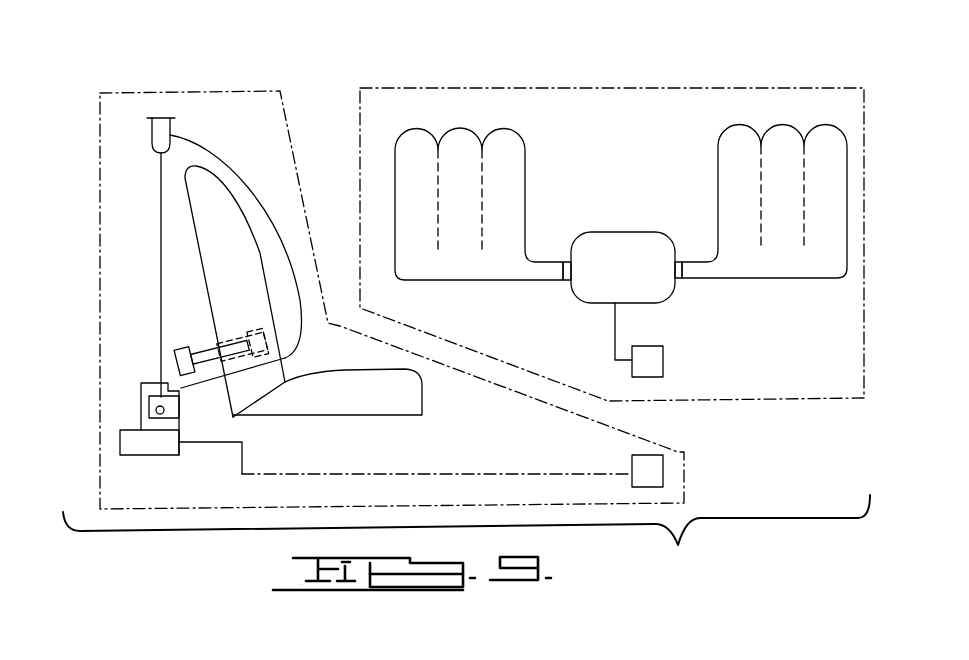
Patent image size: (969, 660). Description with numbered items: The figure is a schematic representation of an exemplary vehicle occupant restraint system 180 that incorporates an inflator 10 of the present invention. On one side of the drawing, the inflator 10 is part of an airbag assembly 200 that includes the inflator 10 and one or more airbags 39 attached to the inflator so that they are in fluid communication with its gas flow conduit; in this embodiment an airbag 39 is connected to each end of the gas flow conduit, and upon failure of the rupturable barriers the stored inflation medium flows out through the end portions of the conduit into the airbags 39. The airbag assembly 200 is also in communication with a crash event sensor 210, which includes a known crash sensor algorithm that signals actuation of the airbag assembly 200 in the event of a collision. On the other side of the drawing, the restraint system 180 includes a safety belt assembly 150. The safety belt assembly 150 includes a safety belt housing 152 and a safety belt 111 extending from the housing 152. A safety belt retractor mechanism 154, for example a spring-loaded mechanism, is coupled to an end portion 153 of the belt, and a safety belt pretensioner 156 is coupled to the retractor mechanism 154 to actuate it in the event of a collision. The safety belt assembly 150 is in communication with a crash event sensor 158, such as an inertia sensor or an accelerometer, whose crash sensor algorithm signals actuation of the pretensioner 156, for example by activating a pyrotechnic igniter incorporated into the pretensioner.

The safety belt assembly 150 is at (186, 84).
The safety belt 111 is at (227, 162).
The end portion of the belt 153 is at (148, 372).
The safety belt retractor mechanism 154 is at (140, 388).
The safety belt housing 152 is at (181, 415).
The safety belt pretensioner 156 is at (147, 447).
The crash event sensor 158 is at (662, 477).
The airbag assembly 200 is at (537, 80).
The airbag 39 is at (516, 163).
The inflator 10 is at (597, 226).
The crash event sensor 210 is at (662, 358).
The vehicle occupant restraint system 180 is at (466, 540).